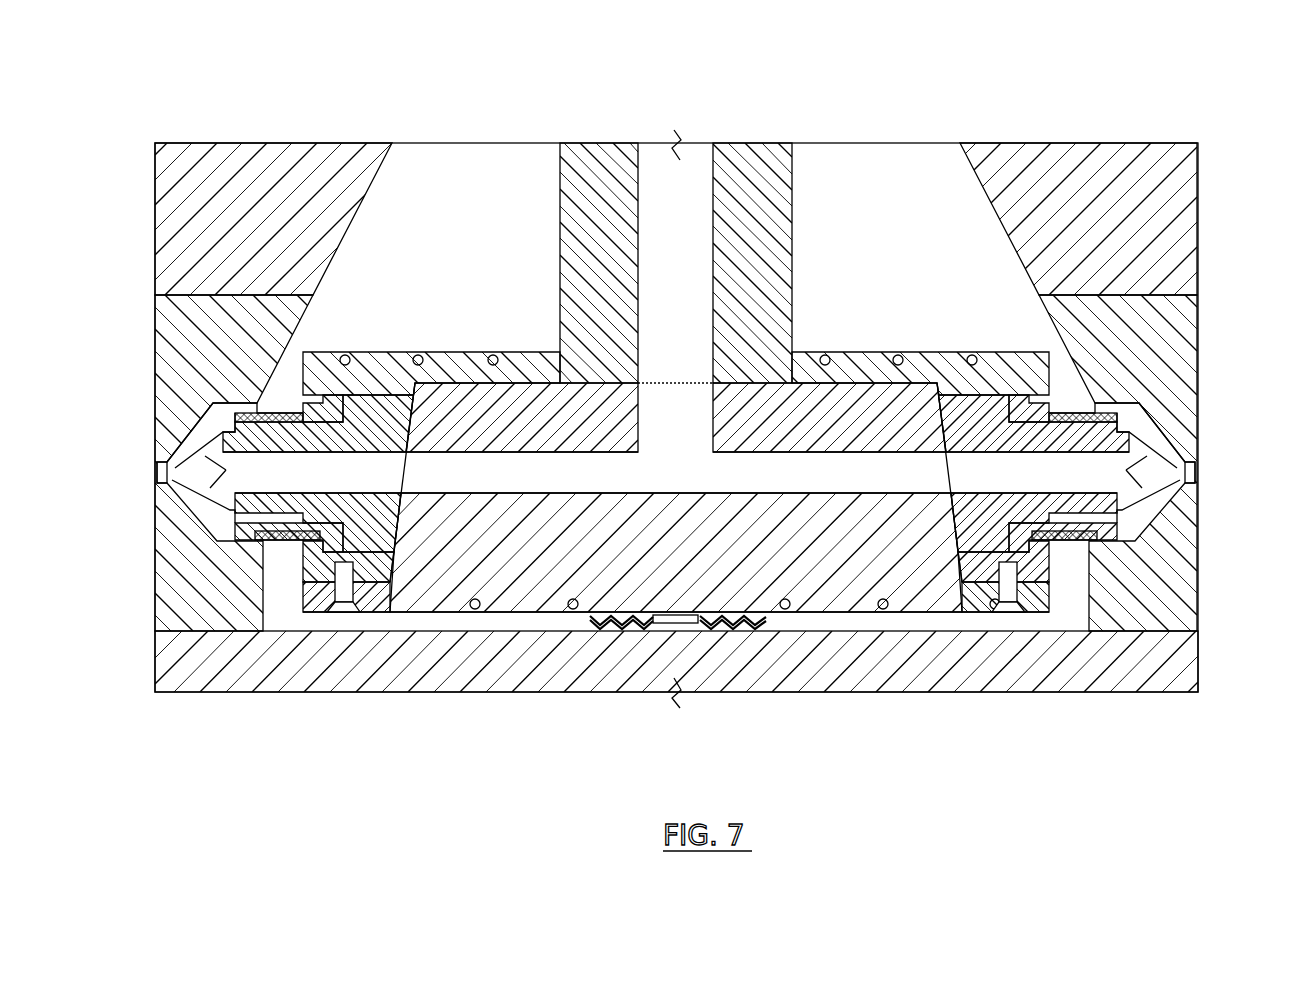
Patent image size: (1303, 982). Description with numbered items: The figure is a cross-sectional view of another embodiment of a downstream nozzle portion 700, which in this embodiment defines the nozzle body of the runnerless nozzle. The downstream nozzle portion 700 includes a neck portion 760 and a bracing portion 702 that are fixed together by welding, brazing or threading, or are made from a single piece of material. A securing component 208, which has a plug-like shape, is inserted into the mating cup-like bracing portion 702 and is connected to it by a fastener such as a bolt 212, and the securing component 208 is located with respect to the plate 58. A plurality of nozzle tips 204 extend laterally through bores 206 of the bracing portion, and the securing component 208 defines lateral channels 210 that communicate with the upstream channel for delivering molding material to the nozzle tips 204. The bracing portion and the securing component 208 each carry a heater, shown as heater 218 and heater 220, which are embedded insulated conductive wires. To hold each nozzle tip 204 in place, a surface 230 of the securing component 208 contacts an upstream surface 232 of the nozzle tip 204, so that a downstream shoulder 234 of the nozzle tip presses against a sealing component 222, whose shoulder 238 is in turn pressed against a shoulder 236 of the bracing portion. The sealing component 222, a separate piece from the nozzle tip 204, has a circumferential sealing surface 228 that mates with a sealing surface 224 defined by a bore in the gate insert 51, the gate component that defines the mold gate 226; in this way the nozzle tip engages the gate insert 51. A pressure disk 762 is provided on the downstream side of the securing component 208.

The downstream nozzle portion 700 is at (1098, 95).
The neck portion 760 is at (590, 160).
The heater 218 is at (420, 352).
The bracing portion 702 is at (540, 370).
The bores 206 is at (965, 400).
The sealing component 222 is at (1022, 422).
The mold gate 226 is at (156, 470).
The sealing surface 224 is at (205, 530).
The gate insert 51 is at (182, 590).
The shoulder of the sealing component 238 is at (1045, 408).
The downstream shoulder 234 is at (1022, 515).
The nozzle tip 204 is at (1120, 500).
The bolt 212 is at (343, 596).
The heater 220 is at (475, 609).
The plate 58 is at (565, 665).
The pressure disk 762 is at (727, 628).
The securing component 208 is at (800, 585).
The lateral channels 210 is at (840, 472).
The upstream surface 232 is at (920, 555).
The surface of the securing component 230 is at (950, 592).
The shoulder of the bracing component 236 is at (978, 578).
The circumferential sealing surface 228 is at (1110, 560).